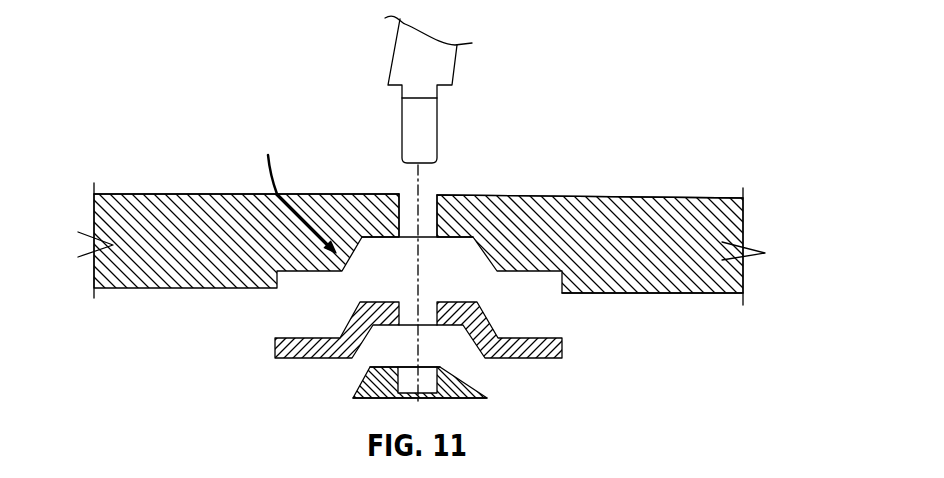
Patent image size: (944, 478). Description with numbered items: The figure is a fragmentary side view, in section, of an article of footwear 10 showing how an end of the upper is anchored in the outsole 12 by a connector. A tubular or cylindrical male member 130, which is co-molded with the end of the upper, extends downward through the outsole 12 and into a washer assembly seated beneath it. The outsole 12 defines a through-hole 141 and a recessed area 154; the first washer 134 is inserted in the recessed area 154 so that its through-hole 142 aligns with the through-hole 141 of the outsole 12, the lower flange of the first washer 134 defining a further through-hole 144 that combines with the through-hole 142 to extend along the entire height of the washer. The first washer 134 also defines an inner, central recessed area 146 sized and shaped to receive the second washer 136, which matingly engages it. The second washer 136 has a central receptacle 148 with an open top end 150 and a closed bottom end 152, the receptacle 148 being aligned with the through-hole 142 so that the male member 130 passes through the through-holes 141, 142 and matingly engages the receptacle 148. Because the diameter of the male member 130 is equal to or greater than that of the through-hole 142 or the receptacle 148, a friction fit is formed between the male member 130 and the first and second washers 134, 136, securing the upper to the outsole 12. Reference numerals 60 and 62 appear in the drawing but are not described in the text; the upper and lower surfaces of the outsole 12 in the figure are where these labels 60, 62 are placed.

The article of footwear 10 is at (617, 120).
The outsole 12 is at (663, 183).
The outer surface 60 is at (705, 197).
The inner surface 62 is at (697, 293).
The male member 130 is at (436, 125).
The through-hole 141 is at (440, 212).
The through-hole 142 is at (476, 306).
The through-hole 144 is at (356, 345).
The recessed area 146 is at (466, 350).
The central receptacle 148 is at (398, 374).
The open top end 150 is at (407, 358).
The closed bottom end 152 is at (440, 402).
The recessed area 154 is at (283, 182).
The first washer 134 is at (232, 334).
The second washer 136 is at (253, 406).